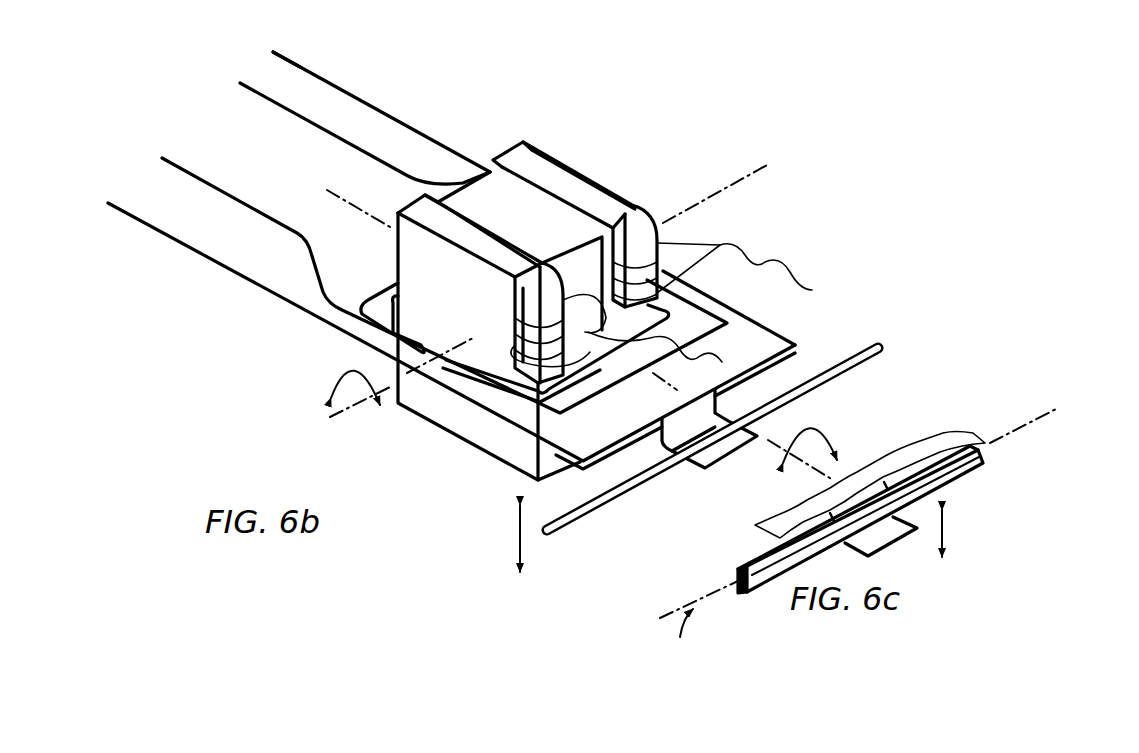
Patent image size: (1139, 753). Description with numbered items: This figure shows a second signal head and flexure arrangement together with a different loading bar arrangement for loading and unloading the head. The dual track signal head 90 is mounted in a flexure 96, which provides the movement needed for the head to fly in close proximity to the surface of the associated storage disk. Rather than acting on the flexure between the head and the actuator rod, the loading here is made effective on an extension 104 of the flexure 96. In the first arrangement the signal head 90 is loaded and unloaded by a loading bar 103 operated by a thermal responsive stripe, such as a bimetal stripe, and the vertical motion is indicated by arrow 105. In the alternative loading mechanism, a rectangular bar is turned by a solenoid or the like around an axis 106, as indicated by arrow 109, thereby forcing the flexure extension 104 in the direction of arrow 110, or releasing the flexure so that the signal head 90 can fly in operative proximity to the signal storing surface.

In FIG. 6B, the dual track signal head 90 is at (511, 220).
In FIG. 6B, the flexure 96 is at (381, 128).
In FIG. 6B, the loading bar 103 is at (602, 504).
In FIG. 6B, the extension of flexure 104 is at (768, 339).
In FIG. 6C, the extension of flexure 104 is at (940, 442).
In FIG. 6B, the vertical movement 105 is at (520, 537).
In FIG. 6C, the axis 106 is at (1032, 434).
In FIG. 6C, the arrow 109 is at (697, 624).
In FIG. 6C, the vertical movement 110 is at (942, 533).